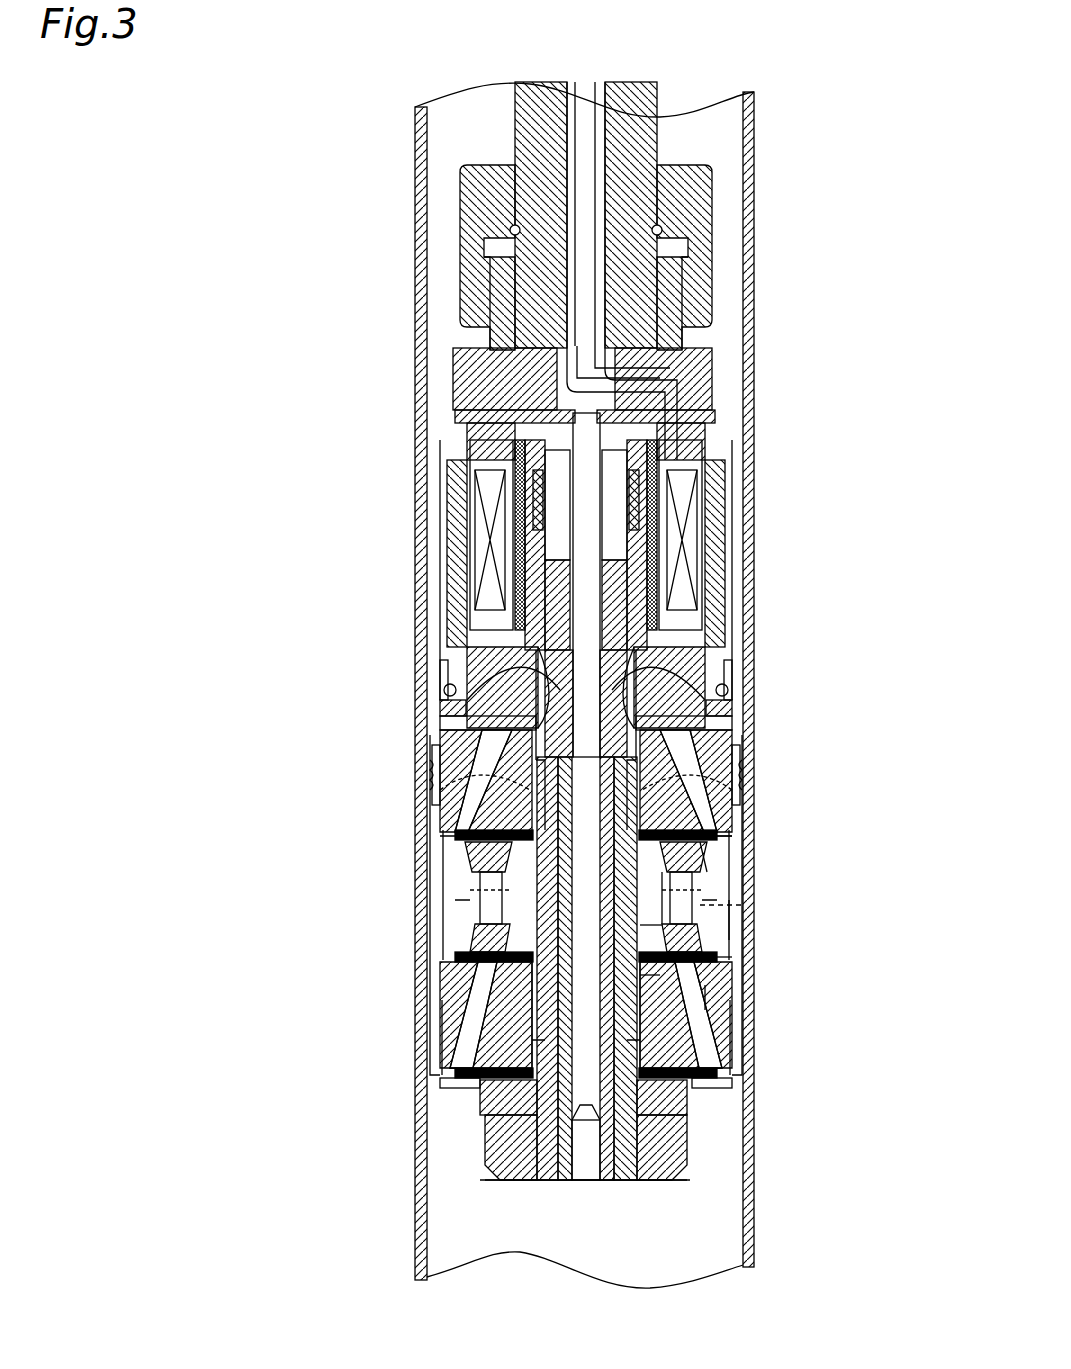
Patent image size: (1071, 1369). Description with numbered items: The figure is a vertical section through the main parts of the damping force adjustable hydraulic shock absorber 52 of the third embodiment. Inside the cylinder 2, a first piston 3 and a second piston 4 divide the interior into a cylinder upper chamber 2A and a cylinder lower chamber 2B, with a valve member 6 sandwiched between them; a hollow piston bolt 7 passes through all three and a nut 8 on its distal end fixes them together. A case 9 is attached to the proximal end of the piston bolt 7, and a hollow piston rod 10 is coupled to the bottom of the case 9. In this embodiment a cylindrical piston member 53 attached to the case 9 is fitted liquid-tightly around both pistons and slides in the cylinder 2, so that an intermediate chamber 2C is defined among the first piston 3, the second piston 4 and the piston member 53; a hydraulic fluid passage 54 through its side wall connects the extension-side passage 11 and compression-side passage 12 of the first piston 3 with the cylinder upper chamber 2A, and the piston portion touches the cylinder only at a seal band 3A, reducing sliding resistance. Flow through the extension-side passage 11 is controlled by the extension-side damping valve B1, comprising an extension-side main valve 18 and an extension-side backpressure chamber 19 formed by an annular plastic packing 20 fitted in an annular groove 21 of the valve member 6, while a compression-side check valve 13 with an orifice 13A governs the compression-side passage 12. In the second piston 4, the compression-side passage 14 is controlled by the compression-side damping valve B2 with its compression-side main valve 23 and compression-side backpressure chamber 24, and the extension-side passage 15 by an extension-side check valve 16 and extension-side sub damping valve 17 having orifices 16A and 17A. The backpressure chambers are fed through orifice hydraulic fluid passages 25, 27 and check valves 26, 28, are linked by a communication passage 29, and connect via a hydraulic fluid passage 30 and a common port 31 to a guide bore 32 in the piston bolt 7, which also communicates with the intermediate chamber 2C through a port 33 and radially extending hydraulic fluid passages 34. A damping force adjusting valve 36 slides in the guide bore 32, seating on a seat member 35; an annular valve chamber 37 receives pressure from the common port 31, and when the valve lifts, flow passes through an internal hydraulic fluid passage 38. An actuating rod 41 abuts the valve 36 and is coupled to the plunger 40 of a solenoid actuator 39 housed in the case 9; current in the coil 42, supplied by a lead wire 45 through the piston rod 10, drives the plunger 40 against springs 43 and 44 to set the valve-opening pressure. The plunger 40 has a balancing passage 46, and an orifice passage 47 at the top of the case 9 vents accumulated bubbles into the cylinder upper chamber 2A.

The cylinder 2 is at (754, 118).
The cylinder upper chamber 2A is at (735, 258).
The cylinder lower chamber 2B is at (722, 1195).
The intermediate chamber 2C is at (750, 920).
The first piston 3 is at (722, 812).
The seal band 3A is at (745, 790).
The second piston 4 is at (735, 1040).
The valve member 6 is at (705, 872).
The piston bolt 7 is at (605, 650).
The nut 8 is at (518, 1173).
The case 9 is at (708, 345).
The piston rod 10 is at (625, 135).
The extension-side passage 11 is at (740, 760).
The compression-side passage 12 is at (500, 775).
The compression-side check valve 13 is at (480, 690).
The orifice 13A is at (440, 735).
The compression-side passage 14 is at (705, 1062).
The extension-side passage 15 is at (505, 1010).
The extension-side check valve 16 is at (470, 1050).
The orifice 16A is at (470, 1075).
The extension-side sub damping valve 17 is at (545, 1085).
The orifice 17A is at (530, 1050).
The extension-side main valve 18 is at (470, 830).
The extension-side backpressure chamber 19 is at (510, 890).
The annular plastic packing 20 is at (700, 842).
The annular groove 21 is at (475, 940).
The compression-side main valve 23 is at (670, 975).
The compression-side backpressure chamber 24 is at (655, 935).
The orifice hydraulic fluid passage 25 is at (480, 850).
The check valve 26 is at (490, 793).
The orifice hydraulic fluid passage 27 is at (690, 885).
The check valve 28 is at (705, 1000).
The communication passage 29 is at (500, 905).
The hydraulic fluid passage 30 is at (525, 948).
The common port 31 is at (520, 985).
The guide bore 32 is at (460, 625).
The port 33 is at (540, 660).
The radially extending hydraulic fluid passages 34 is at (745, 905).
The seat member 35 is at (612, 1102).
The damping force adjusting valve 36 is at (600, 605).
The annular valve chamber 37 is at (700, 722).
The hydraulic fluid passage 38 is at (740, 690).
The solenoid actuator 39 is at (722, 450).
The plunger 40 is at (700, 405).
The actuating rod 41 is at (640, 580).
The coil 42 is at (472, 528).
The spring 43 is at (490, 1140).
The spring 44 is at (660, 548).
The lead wire 45 is at (585, 160).
The balancing passage 46 is at (520, 482).
The orifice passage 47 is at (470, 425).
The hydraulic shock absorber 52 is at (825, 205).
The piston member 53 is at (445, 855).
The hydraulic fluid passage 54 is at (450, 712).
The extension-side damping valve B1 is at (440, 836).
The compression-side damping valve B2 is at (710, 960).